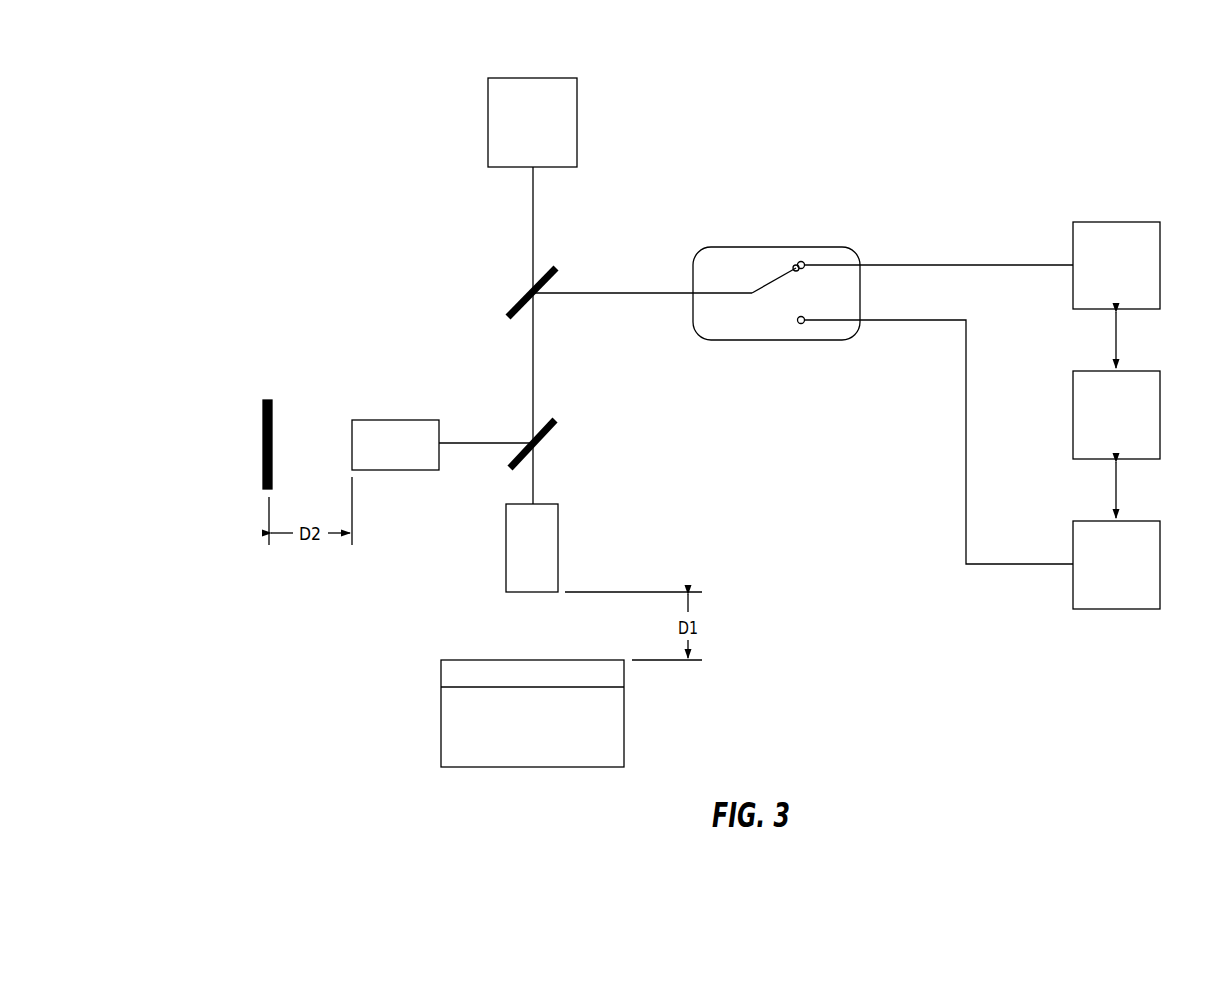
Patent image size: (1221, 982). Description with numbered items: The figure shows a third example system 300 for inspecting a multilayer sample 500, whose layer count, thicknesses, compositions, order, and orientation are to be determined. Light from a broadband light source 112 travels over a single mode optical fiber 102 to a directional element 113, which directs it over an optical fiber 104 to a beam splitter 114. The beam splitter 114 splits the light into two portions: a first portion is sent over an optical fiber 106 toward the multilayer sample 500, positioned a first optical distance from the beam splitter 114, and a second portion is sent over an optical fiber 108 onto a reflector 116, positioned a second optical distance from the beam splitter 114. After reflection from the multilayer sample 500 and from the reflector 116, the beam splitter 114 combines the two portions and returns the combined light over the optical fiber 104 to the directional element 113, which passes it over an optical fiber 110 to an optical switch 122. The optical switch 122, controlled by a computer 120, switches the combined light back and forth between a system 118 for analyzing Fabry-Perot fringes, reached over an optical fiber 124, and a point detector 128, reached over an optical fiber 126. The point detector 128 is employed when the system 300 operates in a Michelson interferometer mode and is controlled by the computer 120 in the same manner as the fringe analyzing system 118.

The single mode optical fiber 102 is at (533, 219).
The optical fiber 104 is at (533, 338).
The optical fiber 106 is at (534, 466).
The optical fiber 108 is at (509, 443).
The optical fiber 110 is at (631, 293).
The broadband light source 112 is at (548, 134).
The directional element 113 is at (518, 299).
The beam splitter 114 is at (553, 428).
The reflector 116 is at (263, 437).
The system for analyzing Fabry-Perot fringes 118 is at (1132, 277).
The computer 120 is at (1132, 426).
The optical switch 122 is at (812, 247).
The optical fiber 124 is at (981, 265).
The optical fiber 126 is at (966, 432).
The point detector 128 is at (1132, 576).
The third example system 300 is at (1100, 84).
The multilayer sample 500 is at (439, 713).